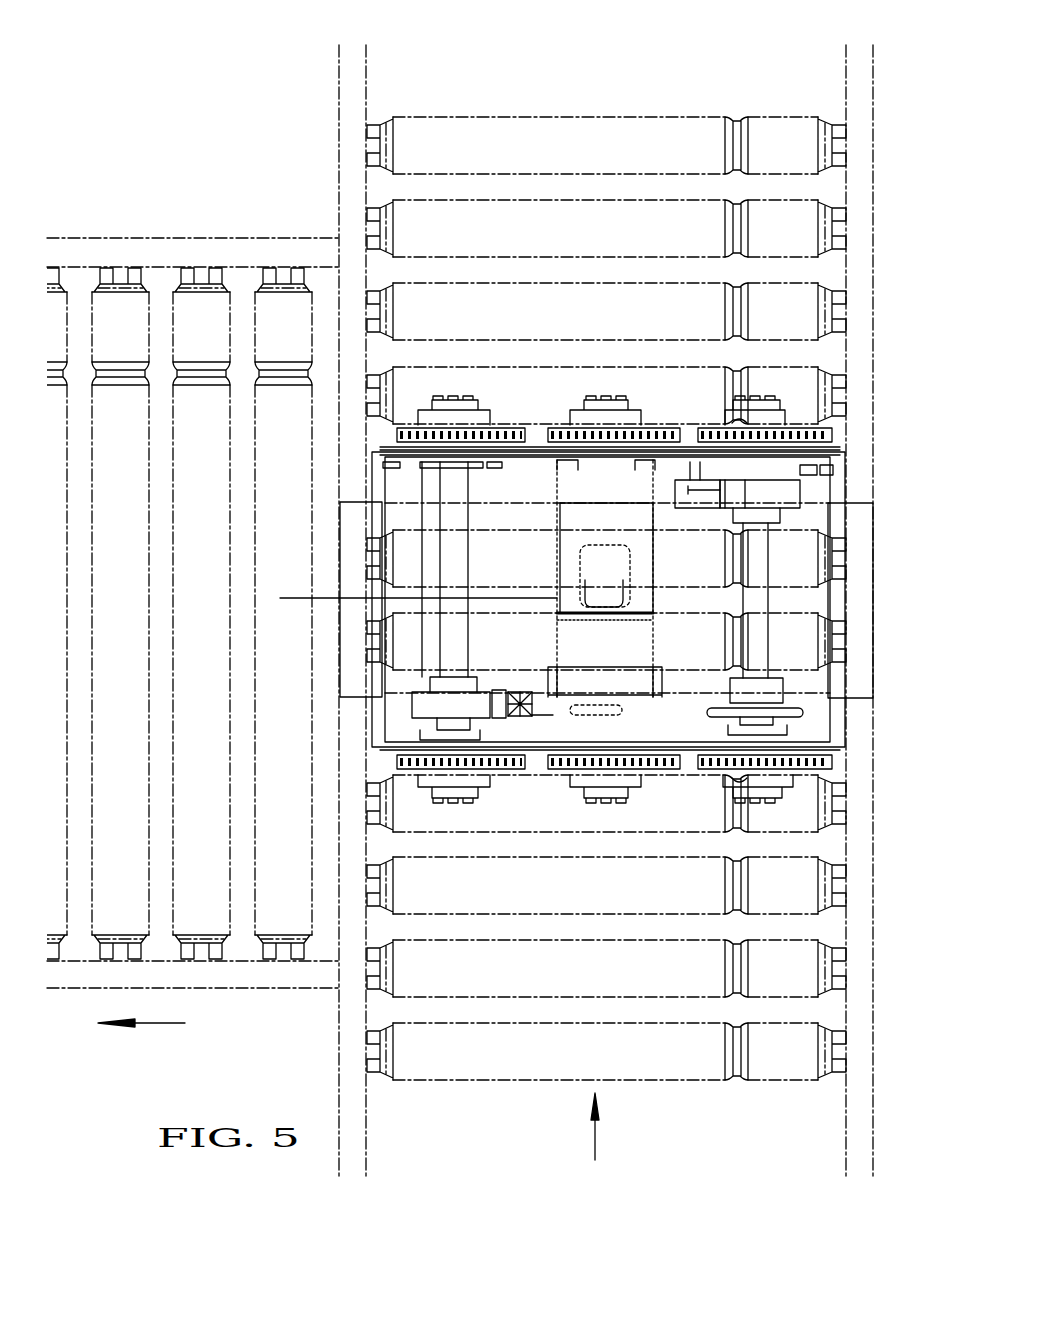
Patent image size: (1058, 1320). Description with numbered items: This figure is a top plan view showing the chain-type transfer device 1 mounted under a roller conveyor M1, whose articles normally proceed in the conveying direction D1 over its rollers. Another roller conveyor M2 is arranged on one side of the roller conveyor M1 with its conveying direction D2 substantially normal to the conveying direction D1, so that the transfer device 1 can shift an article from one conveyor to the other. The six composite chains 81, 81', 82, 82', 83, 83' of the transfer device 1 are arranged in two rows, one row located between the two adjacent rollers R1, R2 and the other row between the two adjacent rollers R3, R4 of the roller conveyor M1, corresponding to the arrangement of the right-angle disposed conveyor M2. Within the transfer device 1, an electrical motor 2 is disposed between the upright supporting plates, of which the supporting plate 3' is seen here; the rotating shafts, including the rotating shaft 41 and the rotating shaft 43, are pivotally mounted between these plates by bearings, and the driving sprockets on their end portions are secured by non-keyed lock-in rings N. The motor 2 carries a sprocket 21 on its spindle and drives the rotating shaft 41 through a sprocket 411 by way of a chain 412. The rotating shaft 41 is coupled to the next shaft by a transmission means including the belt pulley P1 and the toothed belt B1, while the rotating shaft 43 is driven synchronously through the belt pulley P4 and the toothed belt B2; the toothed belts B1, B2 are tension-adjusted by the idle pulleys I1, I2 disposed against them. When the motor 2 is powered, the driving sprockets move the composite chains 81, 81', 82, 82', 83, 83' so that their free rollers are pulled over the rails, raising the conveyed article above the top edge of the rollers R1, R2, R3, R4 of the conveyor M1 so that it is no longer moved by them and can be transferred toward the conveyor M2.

The roller conveyor M1 is at (663, 104).
The roller conveyor M2 is at (90, 237).
The conveying direction D1 is at (594, 1144).
The conveying direction D2 is at (163, 1024).
The chain-type transfer device 1 is at (880, 441).
The electrical motor 2 is at (568, 522).
The supporting plate 3' is at (610, 413).
The sprocket 21 is at (628, 714).
The rotating shaft 41 is at (752, 553).
The rotating shaft 43 is at (458, 545).
The composite chain 81 is at (759, 794).
The composite chain 81' is at (765, 406).
The composite chain 82 is at (615, 794).
The composite chain 82' is at (619, 406).
The composite chain 83 is at (466, 794).
The composite chain 83' is at (464, 406).
The sprocket 411 is at (795, 706).
The chain 412 is at (700, 707).
The toothed belt B1 is at (665, 497).
The toothed belt B2 is at (415, 707).
The idle pulley I1 is at (688, 503).
The idle pulley I2 is at (500, 690).
The non-keyed lock-in ring N is at (622, 427).
The belt pulley P1 is at (754, 515).
The belt pulley P4 is at (415, 690).
The roller R1 is at (818, 790).
The roller R2 is at (820, 700).
The roller R3 is at (815, 492).
The roller R4 is at (818, 393).